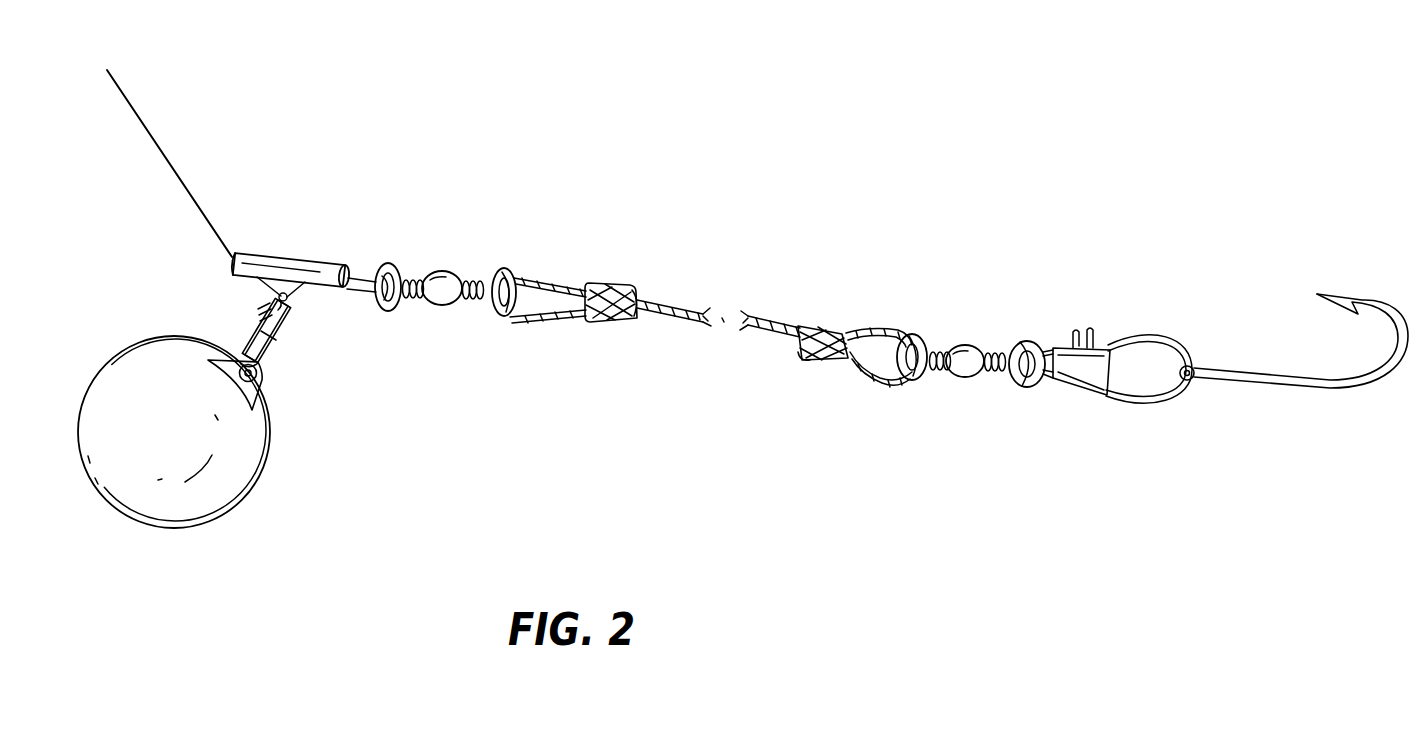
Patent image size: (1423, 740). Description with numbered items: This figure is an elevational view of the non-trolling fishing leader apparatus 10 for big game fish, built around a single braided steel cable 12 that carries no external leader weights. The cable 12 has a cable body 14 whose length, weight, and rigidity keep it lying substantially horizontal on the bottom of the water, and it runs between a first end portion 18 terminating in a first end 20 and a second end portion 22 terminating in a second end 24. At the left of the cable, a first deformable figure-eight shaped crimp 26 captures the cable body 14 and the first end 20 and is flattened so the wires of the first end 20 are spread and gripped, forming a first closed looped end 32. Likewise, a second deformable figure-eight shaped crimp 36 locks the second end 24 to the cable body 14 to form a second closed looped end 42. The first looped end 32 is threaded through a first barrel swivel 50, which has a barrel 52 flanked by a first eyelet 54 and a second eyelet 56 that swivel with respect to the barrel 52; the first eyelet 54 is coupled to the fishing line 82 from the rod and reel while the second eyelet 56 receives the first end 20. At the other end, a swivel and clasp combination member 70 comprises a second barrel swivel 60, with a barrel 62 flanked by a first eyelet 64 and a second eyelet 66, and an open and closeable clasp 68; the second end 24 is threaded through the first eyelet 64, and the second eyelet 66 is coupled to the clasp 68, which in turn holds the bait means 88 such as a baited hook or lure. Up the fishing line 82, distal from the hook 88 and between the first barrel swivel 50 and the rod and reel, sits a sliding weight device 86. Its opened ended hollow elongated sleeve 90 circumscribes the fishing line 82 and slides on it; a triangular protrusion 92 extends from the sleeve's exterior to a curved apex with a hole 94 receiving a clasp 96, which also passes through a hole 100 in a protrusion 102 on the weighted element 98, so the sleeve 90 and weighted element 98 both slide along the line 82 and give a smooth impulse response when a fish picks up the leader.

The non-trolling fishing leader apparatus 10 is at (874, 212).
The single braided steel cable 12 is at (776, 324).
The cable body 14 is at (680, 310).
The first end portion 18 is at (548, 296).
The first end 20 is at (634, 296).
The second end portion 22 is at (876, 351).
The second end 24 is at (798, 360).
The first deformable figure-eight shaped crimp 26 is at (606, 280).
The first closed looped end 32 is at (552, 328).
The second deformable figure-eight shaped crimp 36 is at (838, 330).
The second closed looped end 42 is at (874, 384).
The first barrel swivel 50 is at (433, 290).
The barrel 52 is at (442, 306).
The first eyelet 54 is at (502, 318).
The second eyelet 56 is at (388, 312).
The second barrel swivel 60 is at (961, 371).
The barrel 62 is at (964, 380).
The first eyelet 64 is at (910, 382).
The second eyelet 66 is at (1028, 388).
The open and closeable clasp 68 is at (1182, 338).
The swivel and clasp combination member 70 is at (1135, 335).
The fishing line 82 is at (185, 173).
The sliding weight device 86 is at (304, 248).
The bait means 88 is at (1266, 388).
The opened ended hollow elongated sleeve 90 is at (300, 262).
The triangular protrusion 92 is at (250, 290).
The hole 94 is at (262, 302).
The clasp 96 is at (272, 360).
The weighted element 98 is at (226, 503).
The hole 100 is at (258, 408).
The protrusion 102 is at (264, 387).